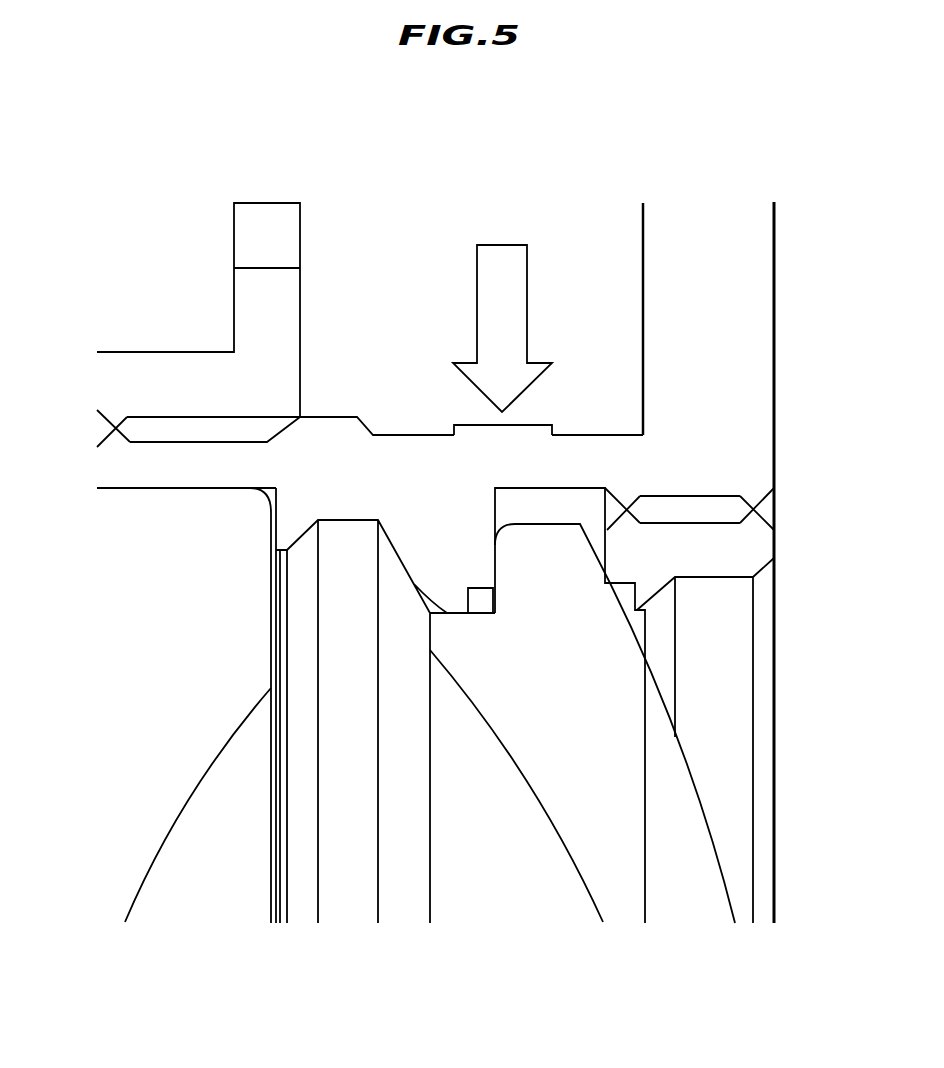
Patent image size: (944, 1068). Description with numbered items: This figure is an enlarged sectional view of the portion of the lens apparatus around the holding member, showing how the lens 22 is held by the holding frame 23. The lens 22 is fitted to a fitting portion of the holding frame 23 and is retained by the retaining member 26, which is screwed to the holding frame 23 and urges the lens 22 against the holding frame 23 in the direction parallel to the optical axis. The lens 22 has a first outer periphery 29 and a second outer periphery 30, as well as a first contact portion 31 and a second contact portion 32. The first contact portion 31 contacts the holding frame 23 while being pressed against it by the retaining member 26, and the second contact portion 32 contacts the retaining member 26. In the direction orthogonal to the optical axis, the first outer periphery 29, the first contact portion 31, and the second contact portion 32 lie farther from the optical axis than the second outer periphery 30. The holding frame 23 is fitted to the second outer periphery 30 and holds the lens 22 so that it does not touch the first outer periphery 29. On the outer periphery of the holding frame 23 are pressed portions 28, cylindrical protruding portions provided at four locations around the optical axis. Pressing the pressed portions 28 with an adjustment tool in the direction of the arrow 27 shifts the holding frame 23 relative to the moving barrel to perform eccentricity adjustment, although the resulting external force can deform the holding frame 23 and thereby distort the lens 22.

The lens 22 is at (665, 775).
The holding frame 23 is at (712, 398).
The retaining member 26 is at (655, 560).
The arrow 27 is at (487, 300).
The pressed portion 28 is at (507, 427).
The first outer periphery 29 is at (550, 522).
The second outer periphery 30 is at (447, 612).
The first contact portion 31 is at (495, 565).
The second contact portion 32 is at (615, 587).